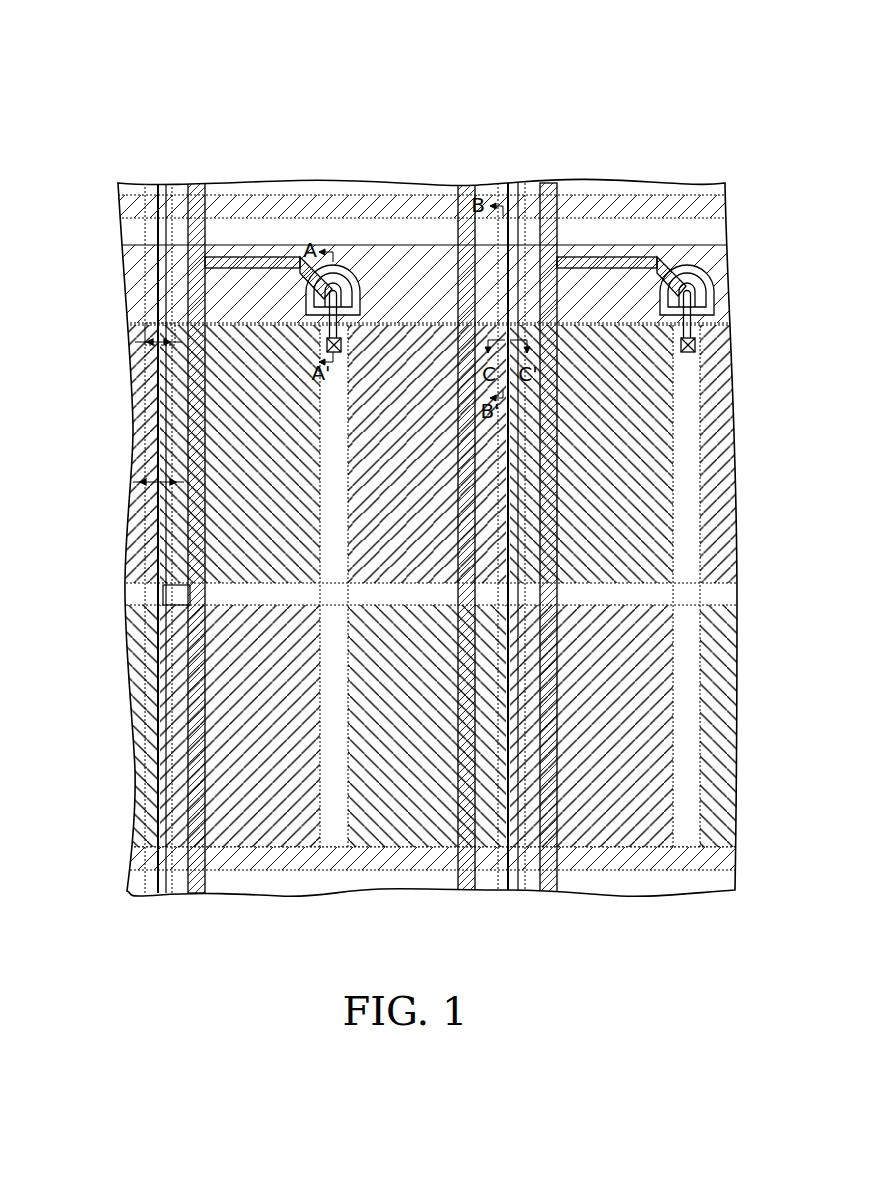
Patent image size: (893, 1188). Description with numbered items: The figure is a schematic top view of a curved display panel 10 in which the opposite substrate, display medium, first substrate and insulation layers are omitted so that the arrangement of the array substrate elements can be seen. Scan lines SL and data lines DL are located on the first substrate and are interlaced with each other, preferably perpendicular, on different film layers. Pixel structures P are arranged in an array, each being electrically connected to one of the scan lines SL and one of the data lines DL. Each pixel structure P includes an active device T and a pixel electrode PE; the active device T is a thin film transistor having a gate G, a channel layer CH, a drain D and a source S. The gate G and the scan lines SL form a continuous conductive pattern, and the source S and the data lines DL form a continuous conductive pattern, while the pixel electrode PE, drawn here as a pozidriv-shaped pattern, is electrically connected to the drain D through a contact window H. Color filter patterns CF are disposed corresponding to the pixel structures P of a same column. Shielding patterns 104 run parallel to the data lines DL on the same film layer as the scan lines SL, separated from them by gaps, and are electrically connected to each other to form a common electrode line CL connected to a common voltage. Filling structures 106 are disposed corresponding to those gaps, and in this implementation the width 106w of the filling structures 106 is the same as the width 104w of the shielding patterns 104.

The curved display panel 10 is at (687, 963).
The shielding patterns 104 is at (147, 193).
The width of the shielding patterns 104w is at (140, 484).
The filling structures 106 is at (147, 233).
The width of the filling structures 106w is at (138, 344).
The pixel structure P is at (310, 49).
The active device T is at (495, 196).
The pixel electrode PE is at (415, 330).
The gate G is at (312, 283).
The source S is at (325, 295).
The channel layer CH is at (336, 280).
The drain D is at (350, 272).
The data lines DL is at (196, 183).
The common electrode line CL is at (120, 205).
The scan lines SL is at (130, 287).
The color filter patterns CF is at (485, 200).
The contact window H is at (150, 428).